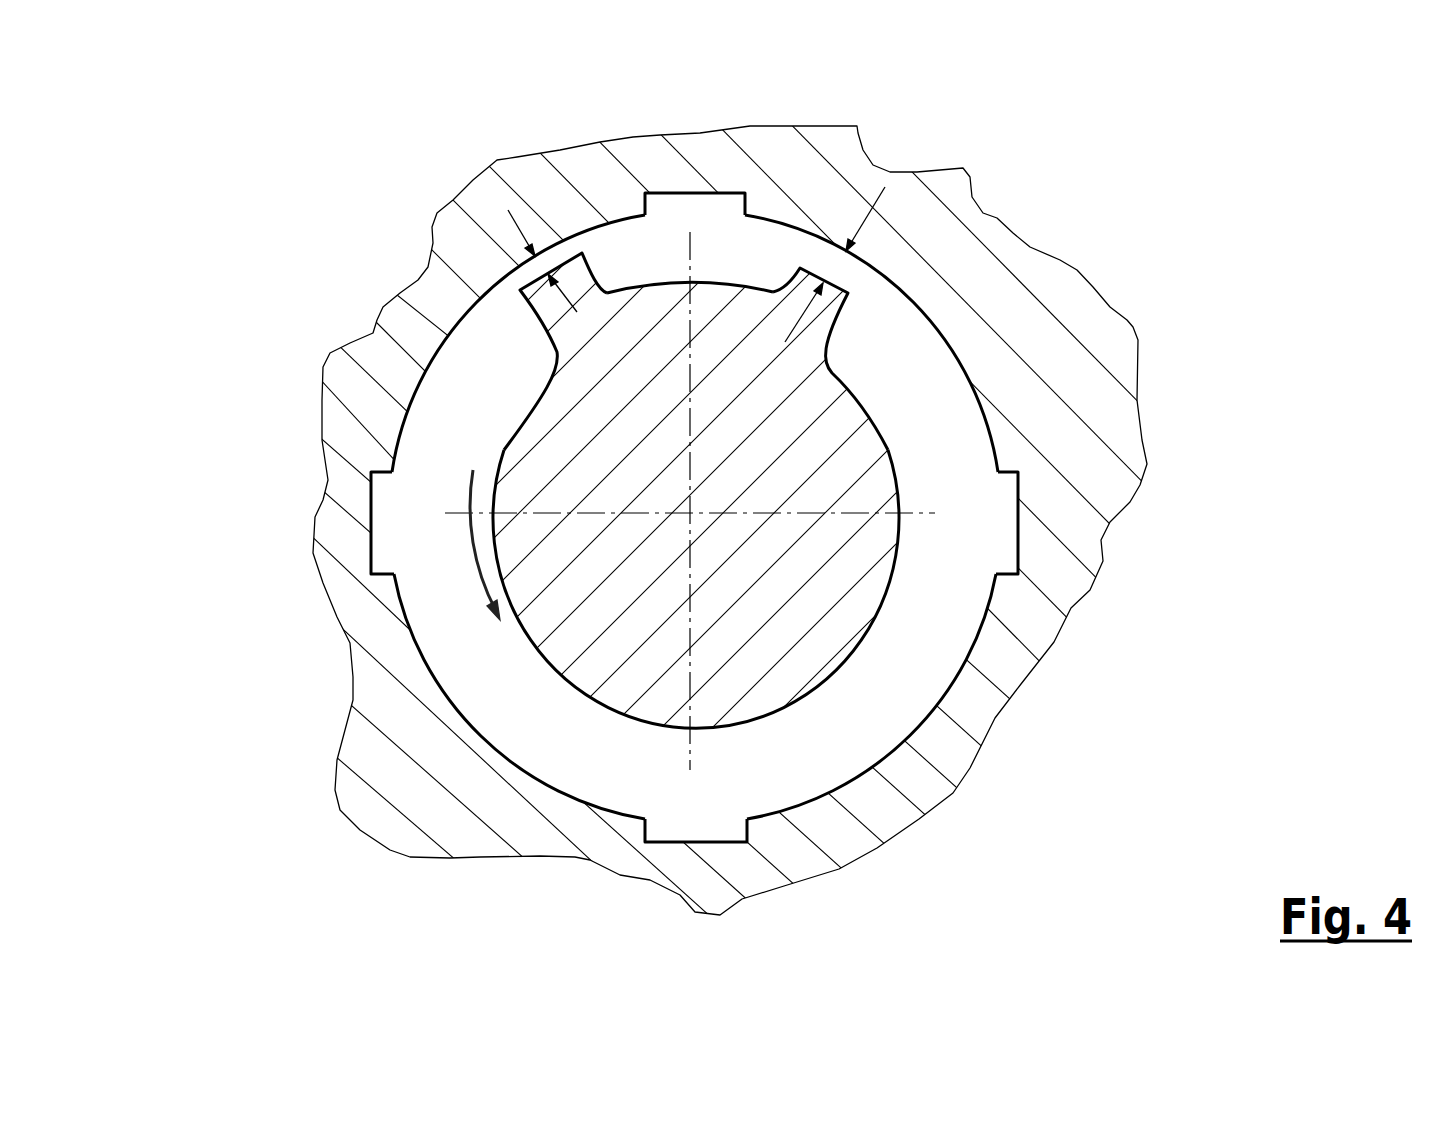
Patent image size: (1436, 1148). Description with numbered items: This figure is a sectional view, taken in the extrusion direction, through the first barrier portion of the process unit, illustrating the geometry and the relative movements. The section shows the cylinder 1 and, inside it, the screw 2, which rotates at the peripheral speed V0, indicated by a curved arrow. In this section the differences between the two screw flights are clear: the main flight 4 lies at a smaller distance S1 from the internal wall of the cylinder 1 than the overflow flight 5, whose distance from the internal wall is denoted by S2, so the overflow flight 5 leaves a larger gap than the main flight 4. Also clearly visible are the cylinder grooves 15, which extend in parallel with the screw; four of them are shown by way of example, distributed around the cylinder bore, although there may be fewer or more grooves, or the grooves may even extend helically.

The cylinder 1 is at (360, 395).
The screw 2 is at (696, 487).
The main flight 4 is at (548, 303).
The overflow flight 5 is at (827, 302).
The cylinder grooves 15 is at (690, 205).
The distance of main flight from internal wall S1 is at (540, 262).
The distance of overflow flight from internal wall S2 is at (833, 268).
The peripheral speed V0 is at (451, 545).